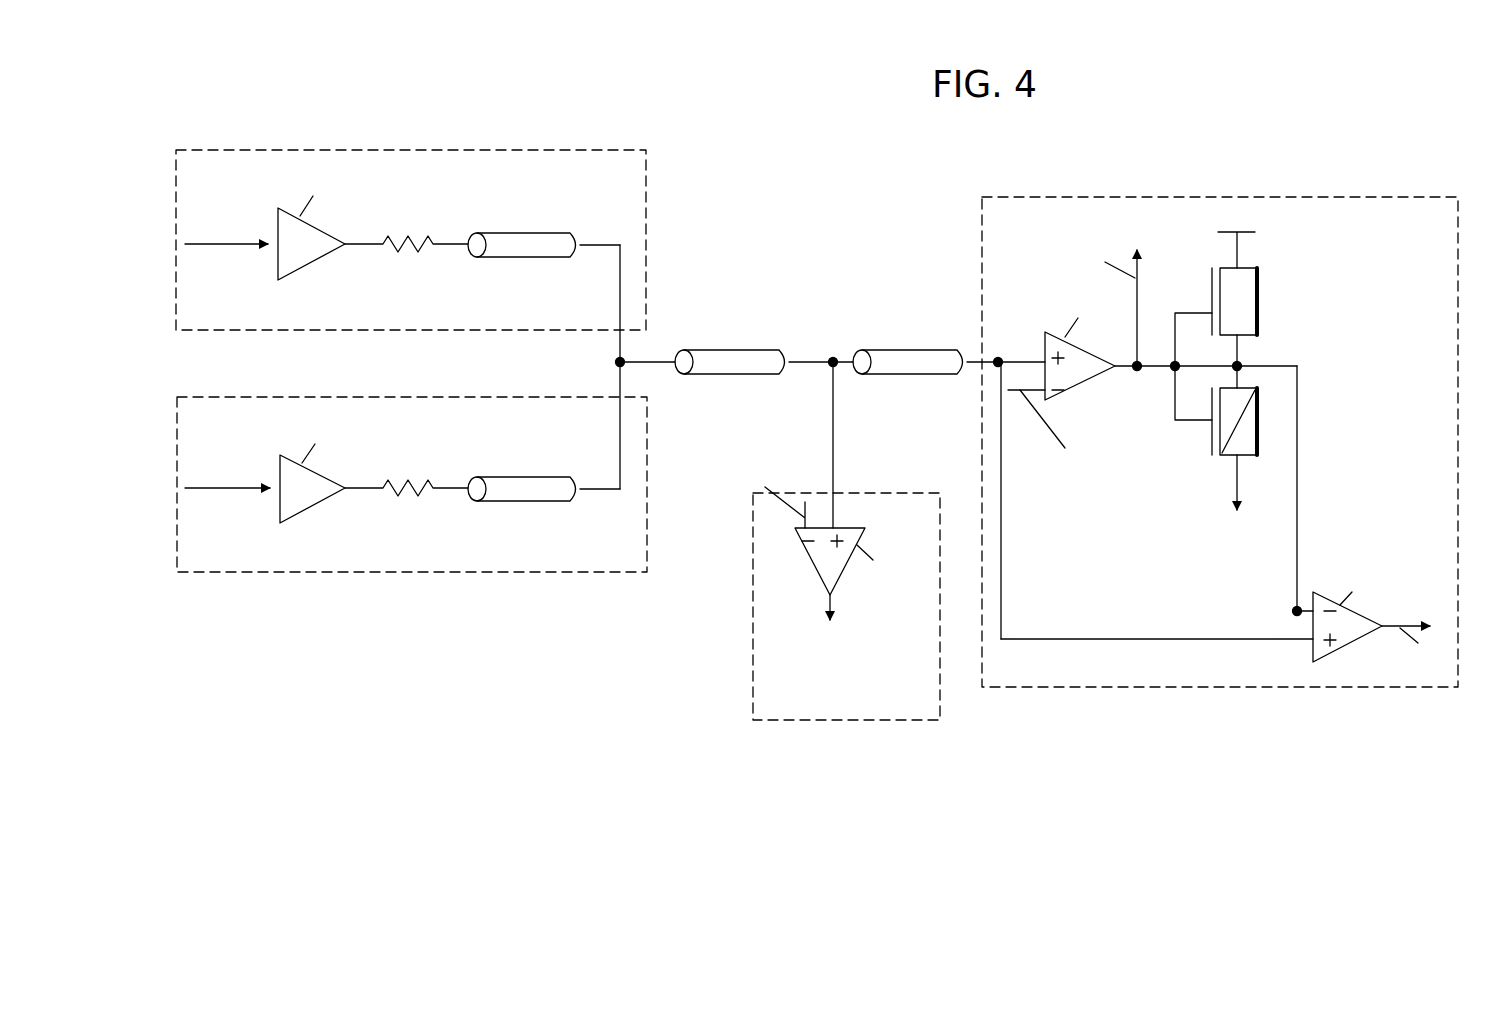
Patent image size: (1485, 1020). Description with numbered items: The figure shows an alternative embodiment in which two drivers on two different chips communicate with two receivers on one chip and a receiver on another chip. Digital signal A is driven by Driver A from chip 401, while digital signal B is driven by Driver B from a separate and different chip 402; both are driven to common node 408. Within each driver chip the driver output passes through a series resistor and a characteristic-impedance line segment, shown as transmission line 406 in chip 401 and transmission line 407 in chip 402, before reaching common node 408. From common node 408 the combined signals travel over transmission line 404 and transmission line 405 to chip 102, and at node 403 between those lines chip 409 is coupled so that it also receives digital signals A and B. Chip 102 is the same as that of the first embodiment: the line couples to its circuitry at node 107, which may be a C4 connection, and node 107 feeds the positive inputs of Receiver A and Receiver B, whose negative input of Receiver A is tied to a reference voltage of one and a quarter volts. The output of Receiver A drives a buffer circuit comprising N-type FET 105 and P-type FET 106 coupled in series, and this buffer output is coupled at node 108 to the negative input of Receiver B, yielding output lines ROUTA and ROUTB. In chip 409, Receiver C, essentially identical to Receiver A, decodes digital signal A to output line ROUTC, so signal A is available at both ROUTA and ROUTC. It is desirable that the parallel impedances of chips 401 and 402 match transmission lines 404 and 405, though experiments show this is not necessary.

The chip 102 is at (1288, 192).
The N-type FET 105 is at (1258, 268).
The P-type FET 106 is at (1227, 457).
The node 107 is at (1003, 355).
The receiver B input node 108 is at (1292, 610).
The chip 401 is at (455, 150).
The chip 402 is at (455, 575).
The node 403 is at (833, 328).
The transmission line 404 is at (745, 375).
The transmission line 405 is at (925, 375).
The driver A transmission line Z0 406 is at (538, 258).
The driver B transmission line Z0 407 is at (538, 502).
The common node 408 is at (617, 360).
The chip 409 is at (752, 677).